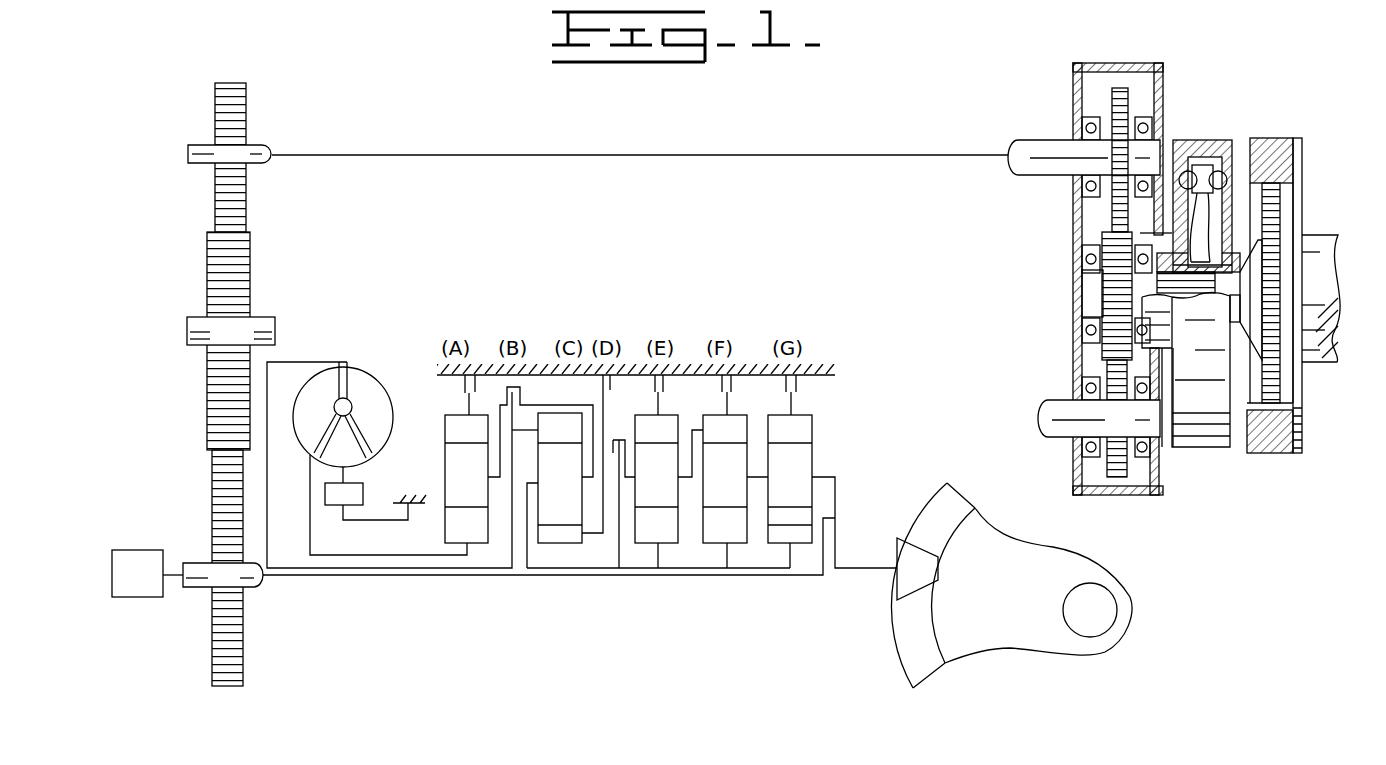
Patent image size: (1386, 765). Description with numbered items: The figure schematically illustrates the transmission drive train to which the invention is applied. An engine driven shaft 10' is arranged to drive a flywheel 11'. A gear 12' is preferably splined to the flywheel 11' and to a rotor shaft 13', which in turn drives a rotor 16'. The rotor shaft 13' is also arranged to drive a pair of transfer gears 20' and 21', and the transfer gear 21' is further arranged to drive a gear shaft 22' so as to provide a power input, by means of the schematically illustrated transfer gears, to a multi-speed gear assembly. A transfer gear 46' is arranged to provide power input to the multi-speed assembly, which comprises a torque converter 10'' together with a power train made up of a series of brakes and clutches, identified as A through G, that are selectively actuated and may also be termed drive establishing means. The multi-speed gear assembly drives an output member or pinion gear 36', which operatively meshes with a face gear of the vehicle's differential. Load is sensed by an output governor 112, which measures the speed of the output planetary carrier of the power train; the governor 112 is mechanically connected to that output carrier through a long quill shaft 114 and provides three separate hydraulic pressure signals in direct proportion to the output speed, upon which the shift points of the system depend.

The engine driven shaft 10' is at (1337, 280).
The torque converter 10'' is at (430, 442).
The flywheel 11' is at (1290, 464).
The gear 12' is at (1296, 295).
The rotor shaft 13' is at (1089, 279).
The rotor 16' is at (1202, 185).
The transfer gear 20' is at (1075, 347).
The transfer gear 21' is at (1158, 130).
The gear shaft 22' is at (1081, 131).
The output member or pinion gear 36' is at (982, 585).
The transfer gear 46' is at (253, 384).
The output governor 112 is at (152, 591).
The quill shaft 114 is at (573, 578).